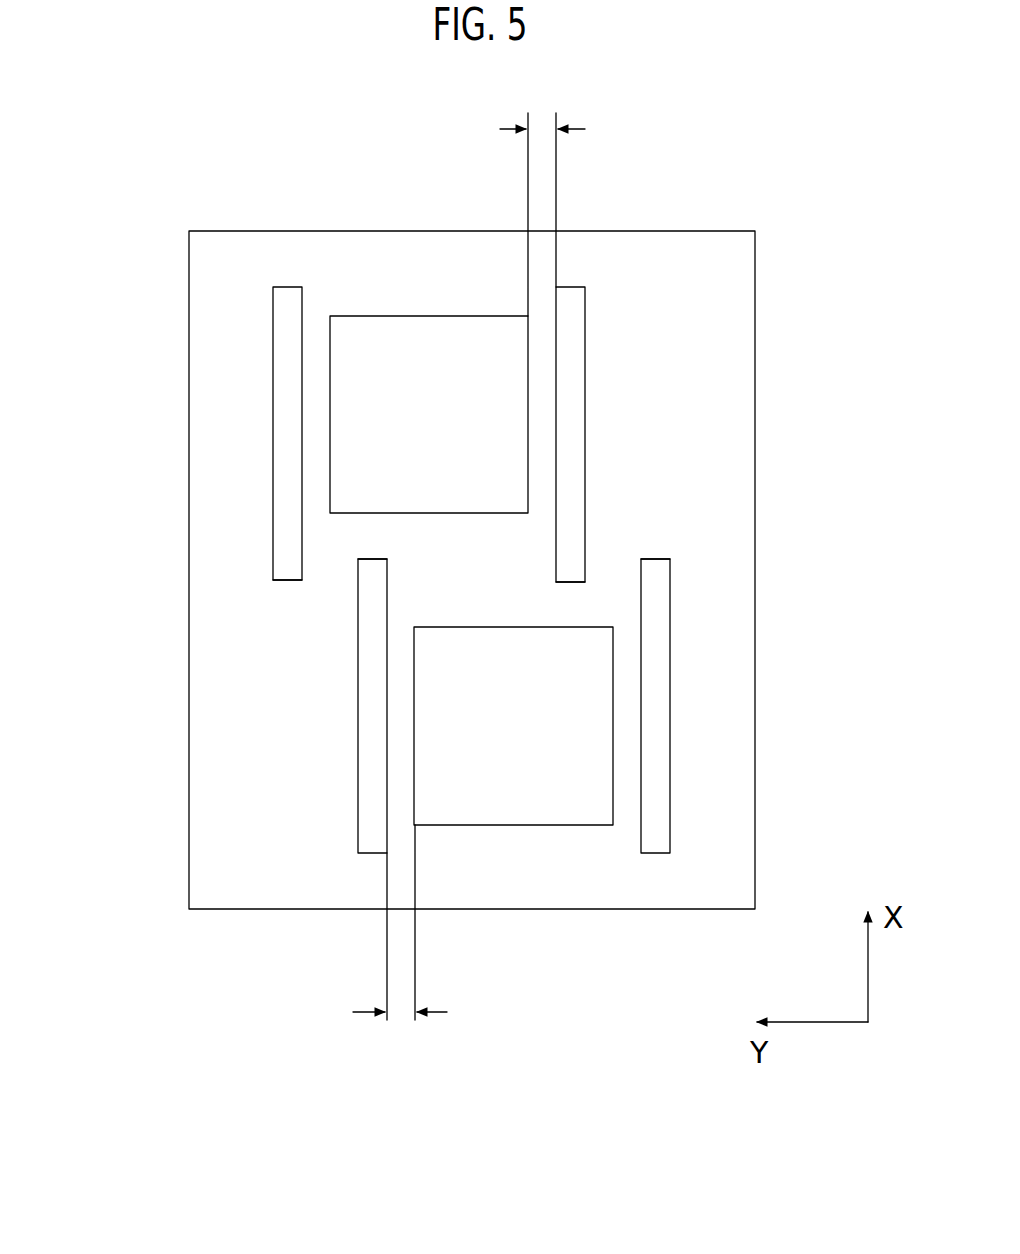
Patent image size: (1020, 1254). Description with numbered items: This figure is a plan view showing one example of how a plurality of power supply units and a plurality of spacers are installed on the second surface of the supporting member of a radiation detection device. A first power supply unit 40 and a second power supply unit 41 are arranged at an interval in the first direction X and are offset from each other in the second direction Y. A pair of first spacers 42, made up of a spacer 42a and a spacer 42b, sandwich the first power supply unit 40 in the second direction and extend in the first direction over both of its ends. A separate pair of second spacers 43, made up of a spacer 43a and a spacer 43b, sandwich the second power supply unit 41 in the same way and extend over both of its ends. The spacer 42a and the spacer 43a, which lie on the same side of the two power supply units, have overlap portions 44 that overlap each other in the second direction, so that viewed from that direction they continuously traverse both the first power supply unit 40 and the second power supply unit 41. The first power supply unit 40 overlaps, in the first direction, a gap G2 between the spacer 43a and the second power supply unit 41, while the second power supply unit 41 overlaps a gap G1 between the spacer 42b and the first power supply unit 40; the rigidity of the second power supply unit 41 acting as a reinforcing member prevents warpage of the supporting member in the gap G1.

The first power supply unit 40 is at (508, 807).
The second power supply unit 41 is at (425, 357).
The pair of first spacers 42 is at (496, 706).
The spacer 42a is at (657, 722).
The spacer 42b is at (372, 728).
The pair of second spacers 43 is at (450, 434).
The spacer 43a is at (287, 383).
The spacer 43b is at (573, 394).
The overlap portions 44 is at (375, 565).
The gap G1 is at (400, 944).
The gap G2 is at (542, 196).